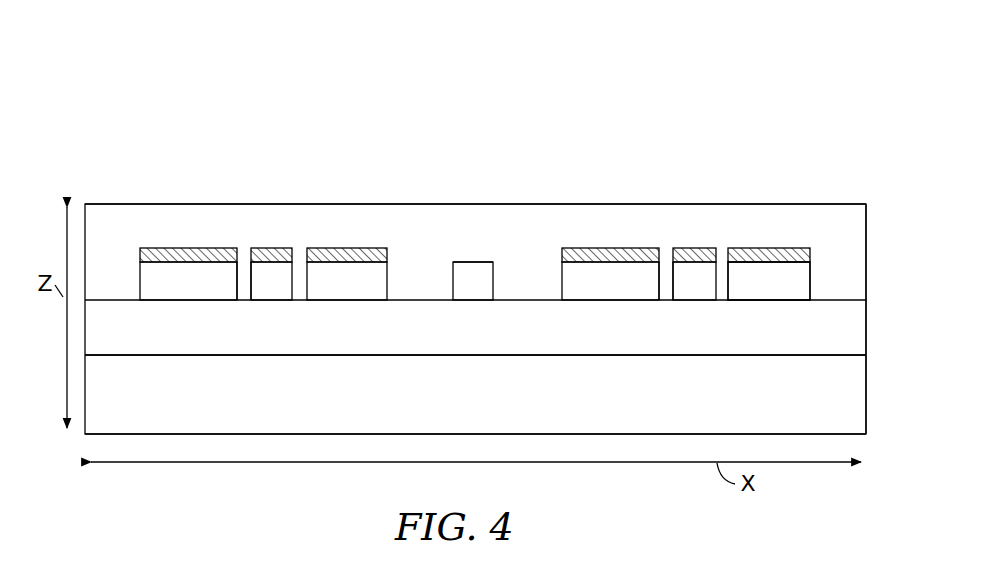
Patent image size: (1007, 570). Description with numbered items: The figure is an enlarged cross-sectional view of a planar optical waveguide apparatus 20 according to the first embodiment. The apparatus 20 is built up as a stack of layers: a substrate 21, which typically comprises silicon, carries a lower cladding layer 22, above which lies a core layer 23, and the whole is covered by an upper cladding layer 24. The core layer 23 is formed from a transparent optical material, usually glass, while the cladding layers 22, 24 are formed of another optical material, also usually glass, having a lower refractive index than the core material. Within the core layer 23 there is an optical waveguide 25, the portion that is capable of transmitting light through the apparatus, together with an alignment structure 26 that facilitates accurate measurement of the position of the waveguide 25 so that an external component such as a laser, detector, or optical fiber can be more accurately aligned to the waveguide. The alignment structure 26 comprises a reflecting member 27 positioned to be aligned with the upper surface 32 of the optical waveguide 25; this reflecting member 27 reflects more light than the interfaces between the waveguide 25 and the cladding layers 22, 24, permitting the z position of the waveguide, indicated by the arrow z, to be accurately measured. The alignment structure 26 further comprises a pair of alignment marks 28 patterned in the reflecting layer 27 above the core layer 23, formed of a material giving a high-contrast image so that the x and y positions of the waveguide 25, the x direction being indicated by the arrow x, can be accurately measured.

The planar optical waveguide apparatus 20 is at (808, 112).
The substrate 21 is at (852, 400).
The lower cladding layer 22 is at (852, 333).
The core layer 23 is at (822, 275).
The upper cladding layer 24 is at (855, 225).
The optical waveguide 25 is at (483, 260).
The alignment structure 26 is at (243, 220).
The reflecting member 27 is at (185, 245).
The alignment marks 28 is at (277, 243).
The upper surface 32 is at (468, 262).